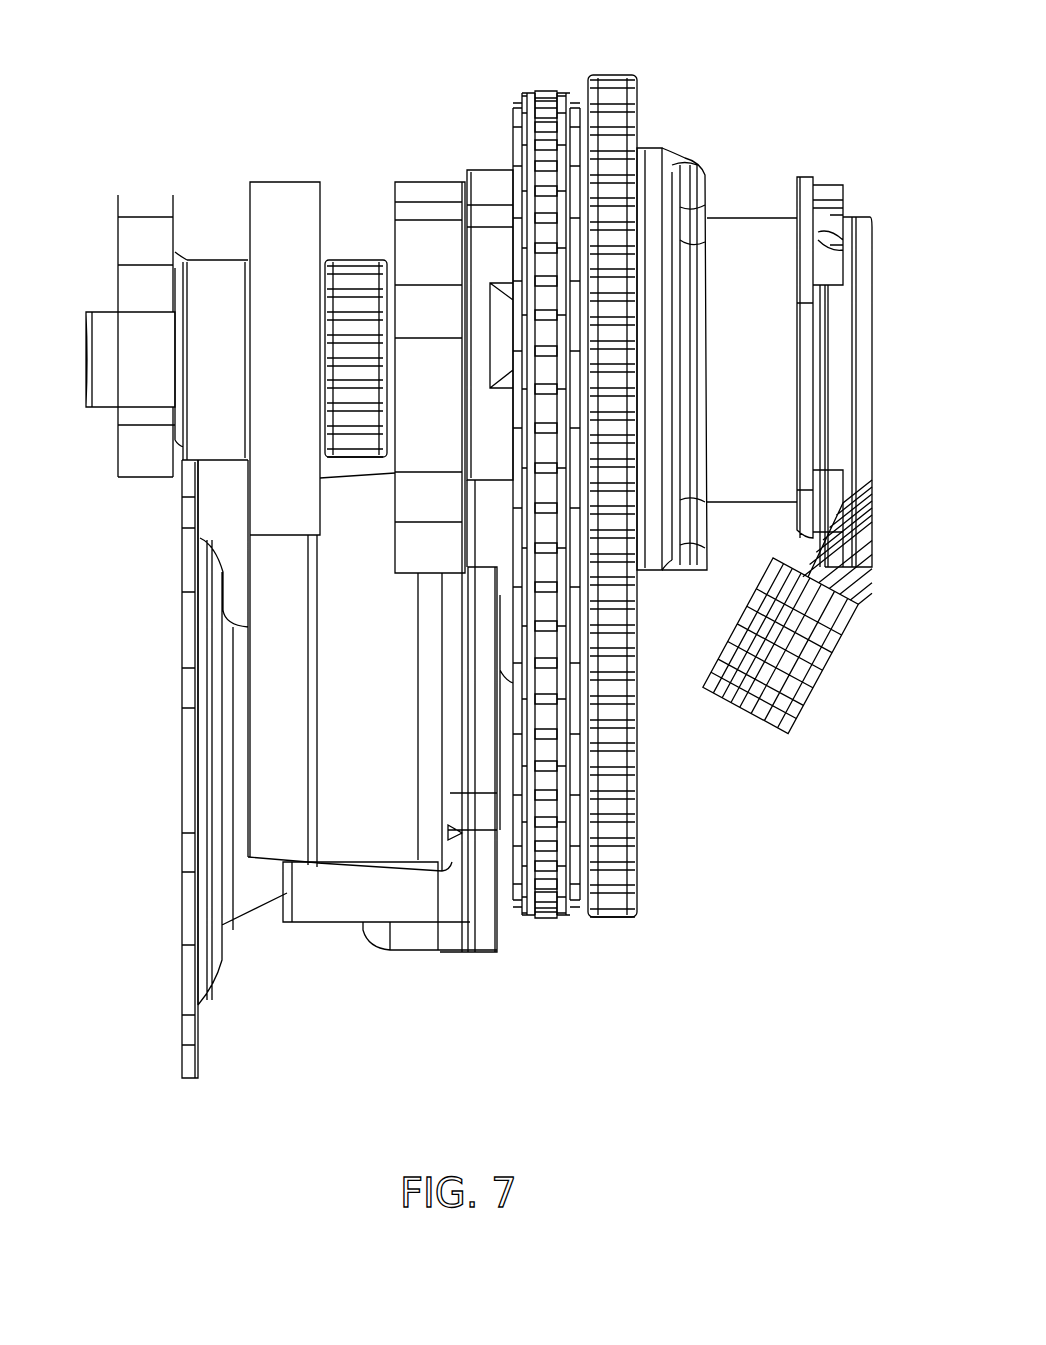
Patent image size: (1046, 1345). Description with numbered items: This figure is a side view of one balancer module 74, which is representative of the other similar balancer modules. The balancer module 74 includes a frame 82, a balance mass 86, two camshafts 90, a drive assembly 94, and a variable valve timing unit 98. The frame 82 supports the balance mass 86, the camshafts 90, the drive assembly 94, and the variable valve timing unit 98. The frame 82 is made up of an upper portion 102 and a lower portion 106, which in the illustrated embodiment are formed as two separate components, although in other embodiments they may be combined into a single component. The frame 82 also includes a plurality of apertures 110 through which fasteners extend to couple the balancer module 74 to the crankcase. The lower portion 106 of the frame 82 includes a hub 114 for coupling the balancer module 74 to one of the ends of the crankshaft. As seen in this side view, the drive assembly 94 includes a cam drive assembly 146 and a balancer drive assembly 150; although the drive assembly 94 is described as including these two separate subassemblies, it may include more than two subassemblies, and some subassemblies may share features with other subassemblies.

The balancer module 74 is at (499, 571).
The frame 82 is at (420, 182).
The balance mass 86 is at (415, 942).
The camshafts 90 is at (112, 395).
The drive assembly 94 is at (738, 870).
The variable valve timing unit 98 is at (872, 310).
The upper portion 102 is at (383, 200).
The lower portion 106 is at (210, 983).
The apertures 110 is at (200, 1052).
The hub 114 is at (180, 782).
The cam drive assembly 146 is at (620, 950).
The balancer drive assembly 150 is at (538, 934).